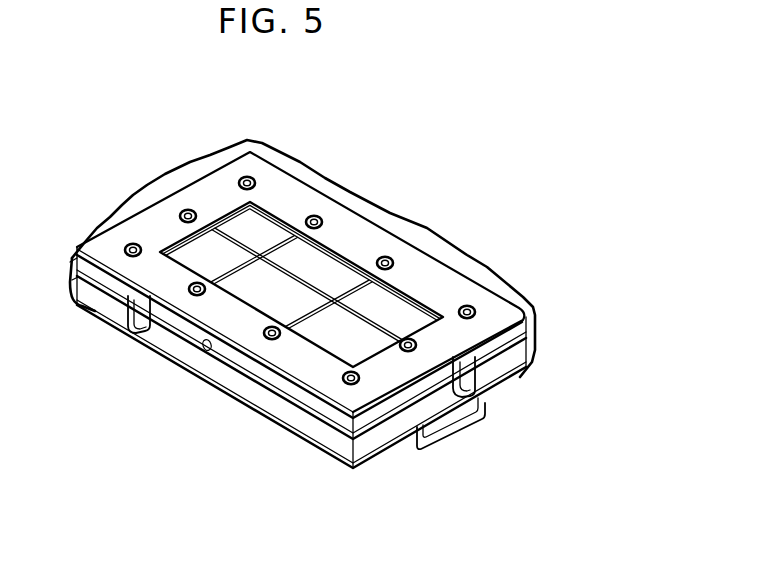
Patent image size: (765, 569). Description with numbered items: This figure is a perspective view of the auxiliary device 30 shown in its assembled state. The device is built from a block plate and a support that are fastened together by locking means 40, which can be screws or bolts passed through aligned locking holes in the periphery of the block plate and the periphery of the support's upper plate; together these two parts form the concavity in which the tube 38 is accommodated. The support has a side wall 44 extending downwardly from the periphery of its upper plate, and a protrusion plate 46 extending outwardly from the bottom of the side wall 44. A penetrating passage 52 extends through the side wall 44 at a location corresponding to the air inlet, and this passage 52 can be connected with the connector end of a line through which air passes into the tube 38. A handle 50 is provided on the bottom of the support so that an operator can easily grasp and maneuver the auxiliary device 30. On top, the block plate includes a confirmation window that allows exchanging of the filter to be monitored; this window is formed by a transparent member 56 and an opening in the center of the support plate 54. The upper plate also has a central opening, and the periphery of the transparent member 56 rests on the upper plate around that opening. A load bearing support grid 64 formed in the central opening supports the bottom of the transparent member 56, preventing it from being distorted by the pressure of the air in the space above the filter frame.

The auxiliary device 30 is at (559, 164).
The tube 38 is at (507, 347).
The locking means 40 is at (187, 213).
The side wall 44 is at (373, 418).
The protrusion plate 46 is at (310, 430).
The handle 50 is at (470, 424).
The penetrating passage 52 is at (195, 342).
The support plate 54 is at (450, 278).
The transparent member 56 is at (322, 267).
The load bearing support grid 64 is at (283, 227).